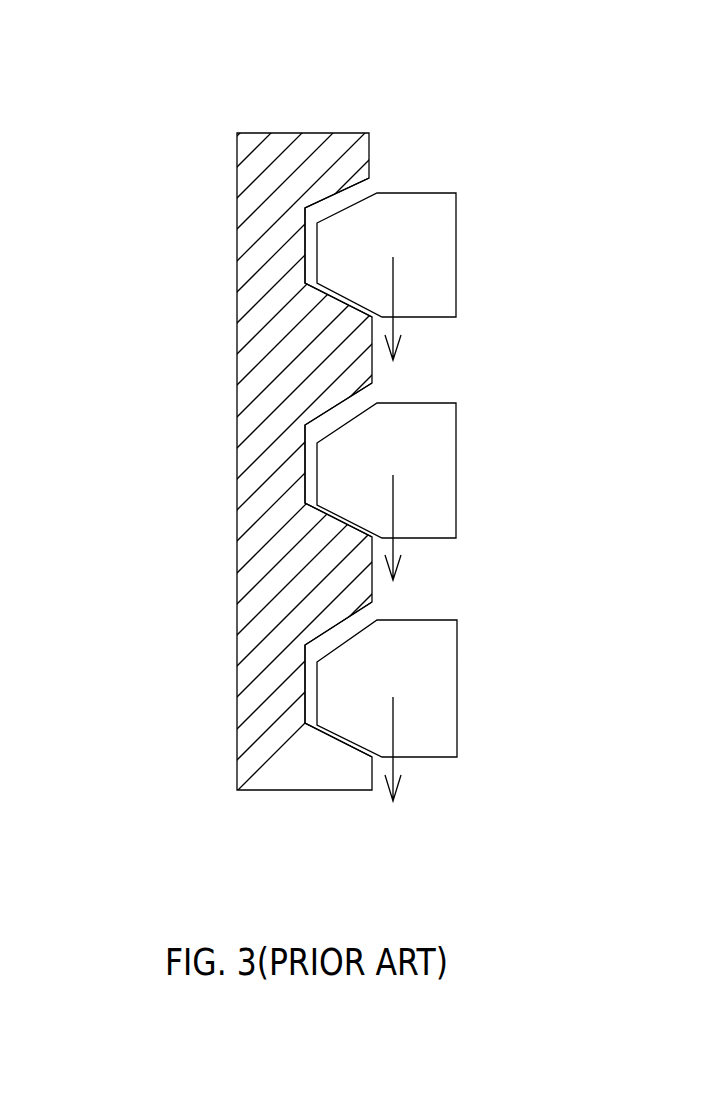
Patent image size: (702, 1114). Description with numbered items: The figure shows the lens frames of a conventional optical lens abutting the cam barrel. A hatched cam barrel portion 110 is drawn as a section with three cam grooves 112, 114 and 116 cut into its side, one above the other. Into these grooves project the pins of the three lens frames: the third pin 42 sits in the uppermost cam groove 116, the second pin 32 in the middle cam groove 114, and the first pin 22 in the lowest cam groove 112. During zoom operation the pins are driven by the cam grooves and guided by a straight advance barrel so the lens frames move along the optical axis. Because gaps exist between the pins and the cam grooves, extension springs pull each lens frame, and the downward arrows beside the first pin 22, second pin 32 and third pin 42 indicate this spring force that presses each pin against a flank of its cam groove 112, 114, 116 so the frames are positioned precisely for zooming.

The polishing pad / base body 110 is at (268, 753).
The cam groove 112 is at (335, 623).
The cam groove 114 is at (338, 405).
The cam groove 116 is at (333, 192).
The first pin 22 is at (405, 648).
The second pin 32 is at (410, 427).
The third pin 42 is at (410, 218).